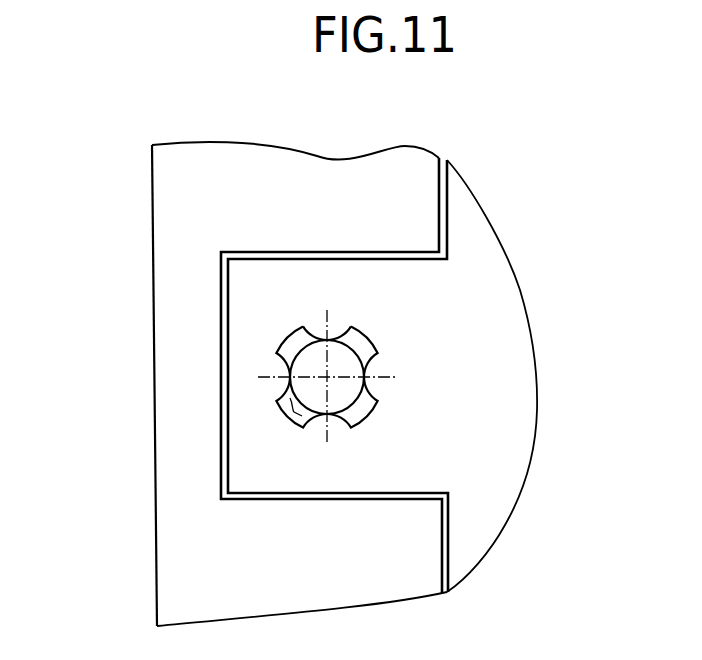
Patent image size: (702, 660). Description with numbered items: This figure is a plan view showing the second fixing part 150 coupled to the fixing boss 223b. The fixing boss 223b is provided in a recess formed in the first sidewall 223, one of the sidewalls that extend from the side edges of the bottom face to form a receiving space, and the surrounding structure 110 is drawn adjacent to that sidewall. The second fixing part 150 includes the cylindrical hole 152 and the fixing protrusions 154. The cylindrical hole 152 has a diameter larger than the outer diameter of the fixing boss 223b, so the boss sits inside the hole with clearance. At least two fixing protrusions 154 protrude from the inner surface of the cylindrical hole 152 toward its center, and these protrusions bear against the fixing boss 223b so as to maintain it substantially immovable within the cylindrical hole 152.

The main body 110 is at (508, 365).
The first sidewall 223 is at (180, 559).
The fixing boss 223b is at (318, 367).
The second fixing part 150 is at (270, 428).
The cylindrical hole 152 is at (283, 412).
The fixing protrusions 154 is at (320, 333).